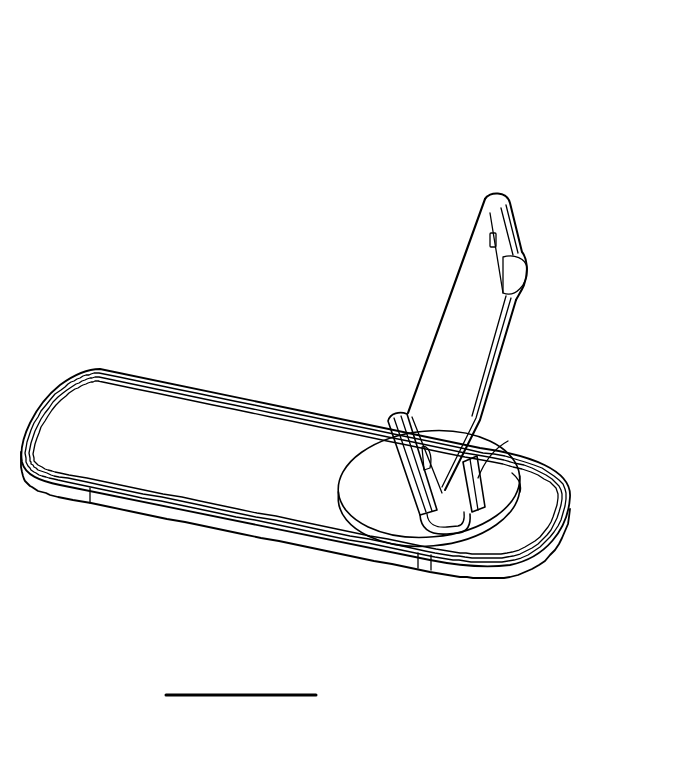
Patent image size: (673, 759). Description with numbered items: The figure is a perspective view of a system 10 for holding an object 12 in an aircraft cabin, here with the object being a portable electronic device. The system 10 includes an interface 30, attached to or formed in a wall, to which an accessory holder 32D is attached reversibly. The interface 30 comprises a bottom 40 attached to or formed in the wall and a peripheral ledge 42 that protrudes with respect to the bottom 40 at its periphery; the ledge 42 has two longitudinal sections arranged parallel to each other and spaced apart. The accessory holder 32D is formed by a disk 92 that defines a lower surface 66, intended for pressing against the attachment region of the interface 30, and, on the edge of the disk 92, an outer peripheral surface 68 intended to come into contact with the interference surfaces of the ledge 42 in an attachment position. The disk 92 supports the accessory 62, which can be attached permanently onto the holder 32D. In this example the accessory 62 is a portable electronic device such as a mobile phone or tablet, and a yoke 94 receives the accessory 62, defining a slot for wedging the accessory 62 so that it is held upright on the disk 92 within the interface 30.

The system for holding objects 10 is at (598, 404).
The object 12 is at (386, 132).
The interface 30 is at (74, 340).
The accessory holder 32D is at (418, 557).
The bottom 40 is at (209, 432).
The peripheral ledge 42 is at (143, 372).
The accessory 62 is at (507, 224).
The lower surface 66 is at (345, 522).
The outer peripheral surface 68 is at (563, 468).
The disk 92 is at (370, 440).
The yoke 94 is at (493, 447).